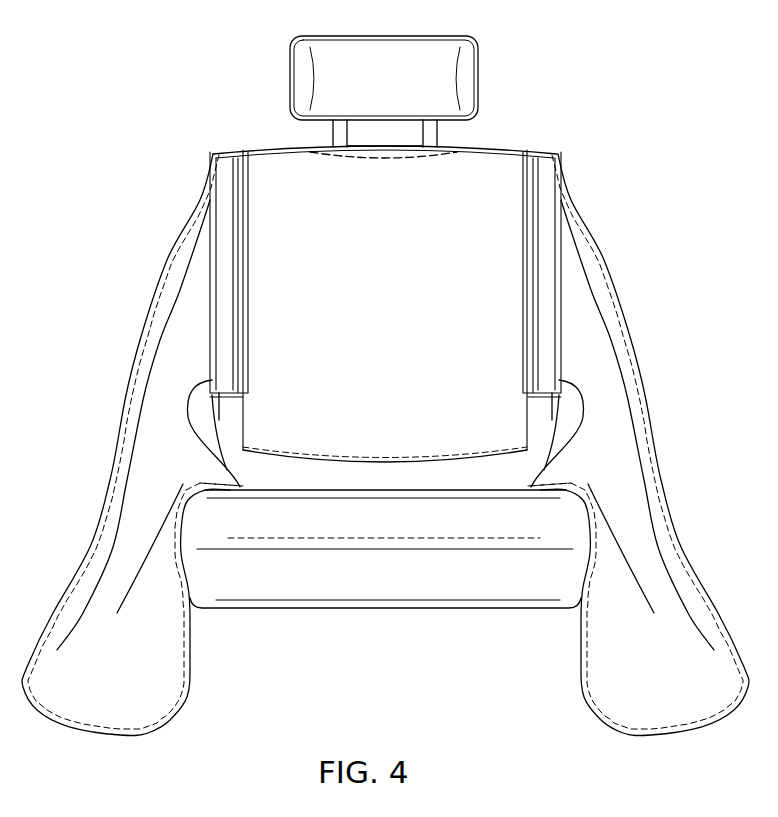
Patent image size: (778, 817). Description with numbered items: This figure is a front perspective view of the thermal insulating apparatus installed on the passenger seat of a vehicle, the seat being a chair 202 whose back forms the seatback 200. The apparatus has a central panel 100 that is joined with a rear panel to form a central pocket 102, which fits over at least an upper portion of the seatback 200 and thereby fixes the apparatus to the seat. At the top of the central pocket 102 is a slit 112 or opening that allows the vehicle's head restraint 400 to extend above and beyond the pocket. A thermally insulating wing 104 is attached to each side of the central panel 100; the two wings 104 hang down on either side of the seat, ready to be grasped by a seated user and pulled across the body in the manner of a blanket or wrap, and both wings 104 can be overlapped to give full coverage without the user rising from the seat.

The head restraint 400 is at (291, 62).
The central pocket 102 is at (512, 143).
The slit 112 is at (357, 152).
The central panel 100 is at (363, 293).
The seatback 200 is at (261, 490).
The chair 202 is at (345, 588).
The wing 104 is at (103, 680).